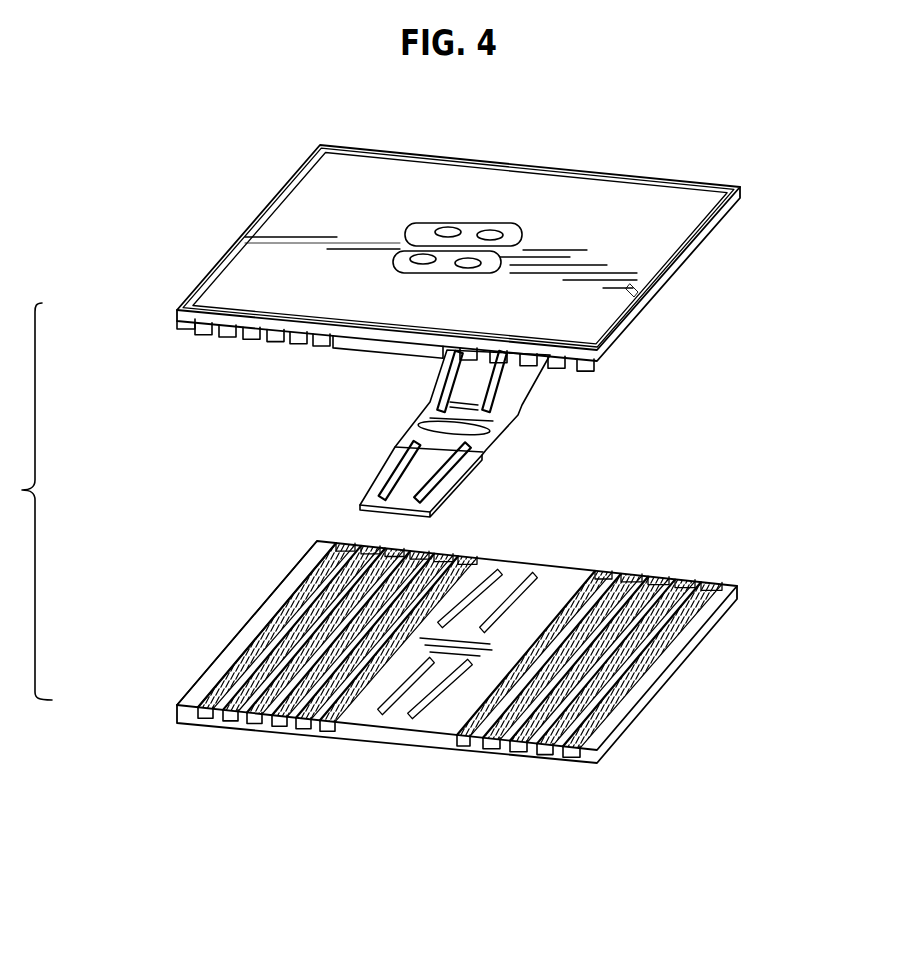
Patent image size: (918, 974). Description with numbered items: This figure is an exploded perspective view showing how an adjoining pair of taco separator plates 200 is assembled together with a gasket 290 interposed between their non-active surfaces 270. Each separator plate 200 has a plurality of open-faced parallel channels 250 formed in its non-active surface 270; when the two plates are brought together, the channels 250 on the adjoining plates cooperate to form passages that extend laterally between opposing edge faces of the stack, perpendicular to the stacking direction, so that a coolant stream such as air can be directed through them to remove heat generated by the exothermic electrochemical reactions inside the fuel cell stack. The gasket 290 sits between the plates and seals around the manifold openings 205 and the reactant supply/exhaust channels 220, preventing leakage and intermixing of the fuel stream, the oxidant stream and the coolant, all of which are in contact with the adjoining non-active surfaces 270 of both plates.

The separator plate 200 is at (745, 190).
The manifold openings 205 is at (423, 259).
The reactant supply/exhaust channels 220 is at (532, 572).
The open-faced parallel channels 250 is at (448, 347).
The non-active surfaces 270 is at (198, 336).
The gasket 290 is at (512, 437).